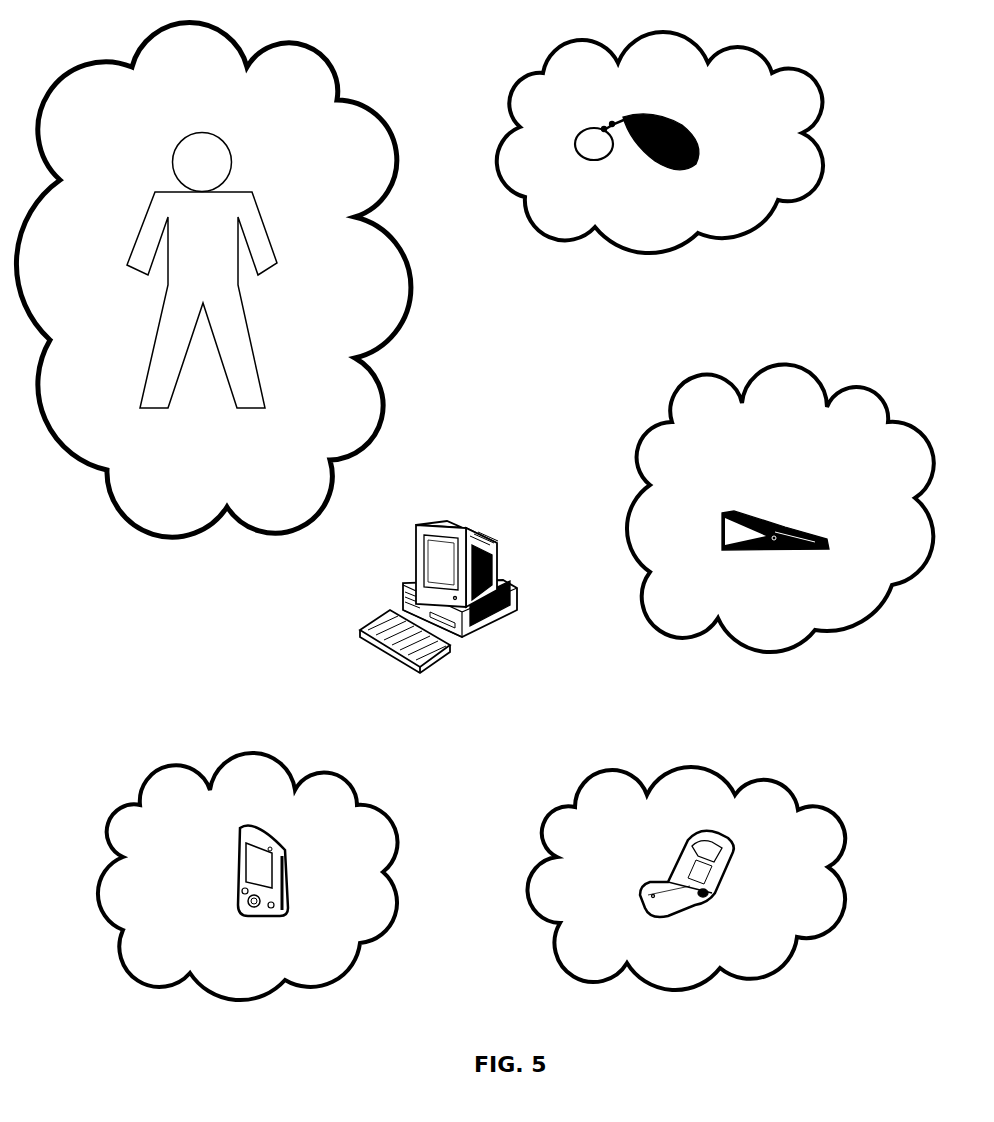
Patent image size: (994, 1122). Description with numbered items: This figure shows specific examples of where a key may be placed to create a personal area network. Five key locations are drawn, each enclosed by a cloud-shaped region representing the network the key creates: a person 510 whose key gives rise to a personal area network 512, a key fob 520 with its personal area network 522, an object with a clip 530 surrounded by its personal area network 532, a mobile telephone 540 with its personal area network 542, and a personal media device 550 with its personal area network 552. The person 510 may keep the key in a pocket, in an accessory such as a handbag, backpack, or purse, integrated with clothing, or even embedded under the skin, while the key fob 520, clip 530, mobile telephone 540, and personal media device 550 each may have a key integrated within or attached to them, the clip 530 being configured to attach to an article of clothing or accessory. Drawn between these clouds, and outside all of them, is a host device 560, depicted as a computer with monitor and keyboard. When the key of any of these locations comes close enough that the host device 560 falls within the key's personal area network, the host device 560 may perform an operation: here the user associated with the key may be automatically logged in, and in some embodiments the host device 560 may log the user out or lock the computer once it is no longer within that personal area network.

The person 510 is at (200, 134).
The personal area network 512 is at (378, 117).
The key fob 520 is at (690, 133).
The personal area network 522 is at (557, 43).
The clip 530 is at (828, 546).
The personal area network 532 is at (683, 386).
The mobile telephone 540 is at (722, 875).
The personal area network 542 is at (685, 763).
The personal media device 550 is at (290, 868).
The personal area network 552 is at (347, 970).
The host device 560 is at (513, 623).